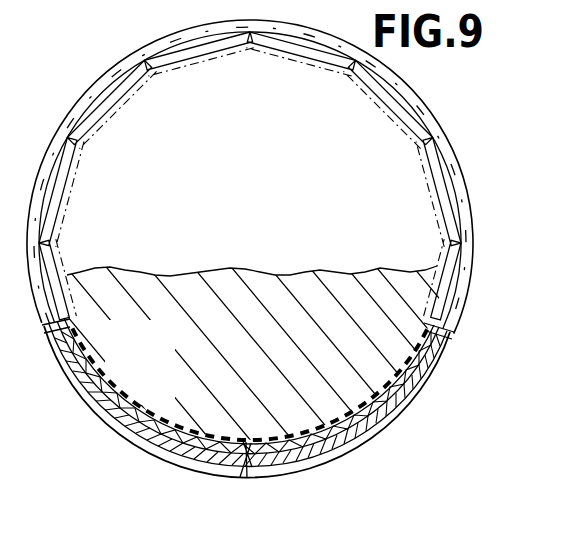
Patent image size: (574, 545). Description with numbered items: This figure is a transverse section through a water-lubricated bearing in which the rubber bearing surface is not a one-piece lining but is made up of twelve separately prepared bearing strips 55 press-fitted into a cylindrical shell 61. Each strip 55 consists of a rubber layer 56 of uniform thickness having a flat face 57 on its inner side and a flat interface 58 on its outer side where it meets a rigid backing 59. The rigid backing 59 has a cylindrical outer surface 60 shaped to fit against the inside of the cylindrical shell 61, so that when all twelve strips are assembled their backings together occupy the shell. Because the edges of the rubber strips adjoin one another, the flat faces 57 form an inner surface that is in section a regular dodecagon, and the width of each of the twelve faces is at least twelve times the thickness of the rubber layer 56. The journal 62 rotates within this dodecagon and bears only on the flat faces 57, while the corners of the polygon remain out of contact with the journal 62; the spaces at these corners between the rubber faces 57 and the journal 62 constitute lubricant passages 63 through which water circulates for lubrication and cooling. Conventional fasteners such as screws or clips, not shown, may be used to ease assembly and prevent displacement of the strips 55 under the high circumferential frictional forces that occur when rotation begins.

The bearing strip 55 is at (153, 403).
The rubber layer 56 is at (117, 378).
The flat face 57 is at (88, 373).
The flat interface 58 is at (78, 371).
The rigid backing 59 is at (112, 416).
The cylindrical outer surface 60 is at (122, 427).
The cylindrical shell 61 is at (367, 434).
The journal 62 is at (376, 364).
The lubricant passage 63 is at (238, 466).